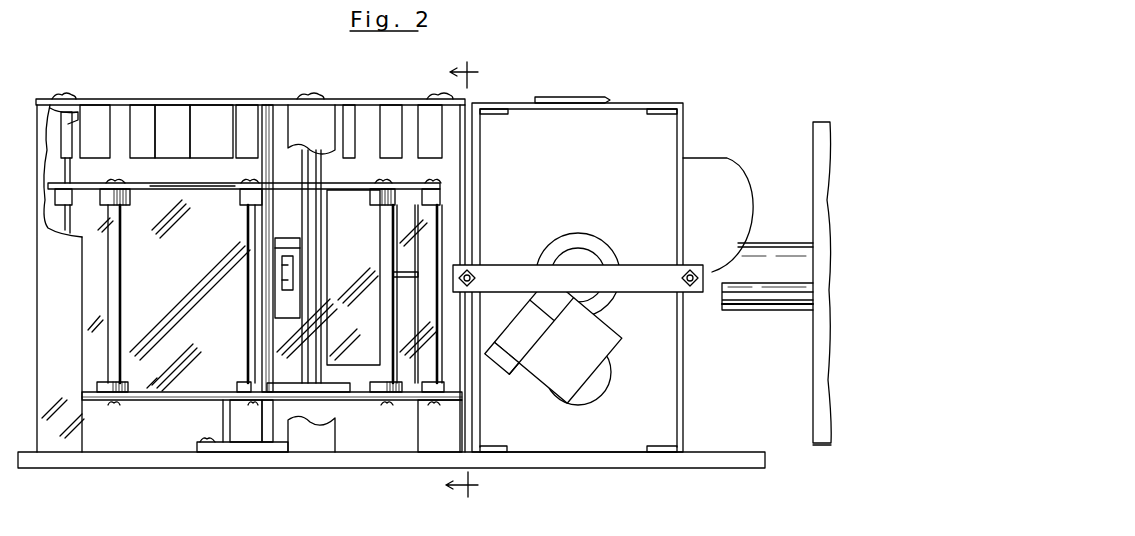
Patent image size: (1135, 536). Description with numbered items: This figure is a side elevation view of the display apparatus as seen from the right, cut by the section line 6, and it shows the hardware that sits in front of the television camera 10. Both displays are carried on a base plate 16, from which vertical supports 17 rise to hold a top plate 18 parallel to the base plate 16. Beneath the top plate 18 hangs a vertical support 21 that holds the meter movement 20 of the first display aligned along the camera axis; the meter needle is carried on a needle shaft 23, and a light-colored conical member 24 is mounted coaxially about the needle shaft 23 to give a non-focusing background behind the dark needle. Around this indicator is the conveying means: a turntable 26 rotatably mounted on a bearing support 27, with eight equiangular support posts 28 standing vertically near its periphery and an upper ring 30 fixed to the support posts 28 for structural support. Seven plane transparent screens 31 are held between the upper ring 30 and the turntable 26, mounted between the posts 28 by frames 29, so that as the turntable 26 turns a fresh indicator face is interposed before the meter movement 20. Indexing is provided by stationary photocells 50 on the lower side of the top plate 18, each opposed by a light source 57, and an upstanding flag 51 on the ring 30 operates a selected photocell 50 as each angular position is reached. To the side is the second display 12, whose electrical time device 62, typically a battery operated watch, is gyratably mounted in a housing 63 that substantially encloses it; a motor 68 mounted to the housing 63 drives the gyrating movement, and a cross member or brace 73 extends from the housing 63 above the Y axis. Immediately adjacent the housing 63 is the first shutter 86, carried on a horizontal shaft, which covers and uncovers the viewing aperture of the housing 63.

The television camera 10 is at (762, 294).
The second display 12 is at (599, 248).
The base plate 16 is at (241, 468).
The vertical supports 17 is at (323, 140).
The top plate 18 is at (181, 100).
The meter movement 20 is at (289, 245).
The vertical support 21 is at (262, 160).
The needle shaft 23 is at (403, 278).
The conical member 24 is at (330, 222).
The turntable 26 is at (162, 401).
The bearing support 27 is at (262, 437).
The support posts 28 is at (121, 284).
The frames 29 is at (107, 400).
The upper ring 30 is at (332, 192).
The plane transparent screens 31 is at (97, 258).
The photocells 50 is at (62, 99).
The upstanding flag 51 is at (192, 189).
The light source 57 is at (93, 112).
The electrical time device 62 is at (568, 248).
The housing 63 is at (686, 140).
The motor 68 is at (597, 390).
The cross member or brace 73 is at (575, 100).
The first shutter 86 is at (735, 180).
The section line 6- 6 is at (453, 279).